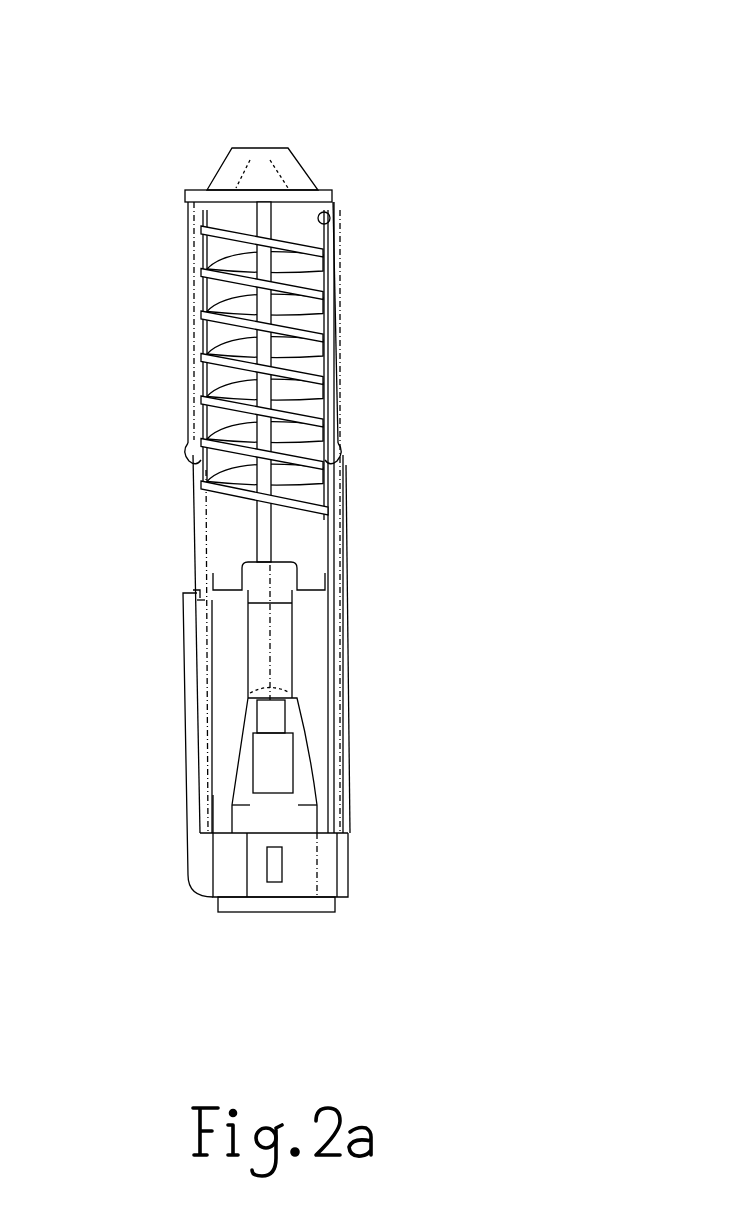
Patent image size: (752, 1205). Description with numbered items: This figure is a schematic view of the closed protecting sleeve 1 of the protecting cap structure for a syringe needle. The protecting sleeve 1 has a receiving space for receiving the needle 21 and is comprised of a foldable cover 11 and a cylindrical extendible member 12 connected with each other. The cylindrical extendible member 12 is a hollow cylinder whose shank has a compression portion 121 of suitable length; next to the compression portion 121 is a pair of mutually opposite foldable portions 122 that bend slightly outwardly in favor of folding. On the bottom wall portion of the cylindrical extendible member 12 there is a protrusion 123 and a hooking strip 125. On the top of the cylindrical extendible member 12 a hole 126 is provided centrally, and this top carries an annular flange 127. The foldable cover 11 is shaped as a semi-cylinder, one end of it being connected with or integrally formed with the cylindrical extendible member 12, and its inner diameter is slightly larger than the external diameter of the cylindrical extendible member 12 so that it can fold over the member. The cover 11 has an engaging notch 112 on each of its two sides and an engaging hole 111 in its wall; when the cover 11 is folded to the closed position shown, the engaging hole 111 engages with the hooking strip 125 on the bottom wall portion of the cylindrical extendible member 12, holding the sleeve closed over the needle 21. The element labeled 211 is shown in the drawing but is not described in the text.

The protecting sleeve 1 is at (508, 72).
The foldable cover 11 is at (188, 303).
The engaging hole 111 is at (186, 597).
The engaging notch 112 is at (192, 450).
The cylindrical extendible member 12 is at (315, 545).
The compression portion 121 is at (305, 295).
The foldable portions 122 is at (302, 640).
The protrusion 123 is at (275, 865).
The hooking strip 125 is at (190, 600).
The hole 126 is at (262, 148).
The annular flange 127 is at (323, 190).
The needle 21 is at (305, 752).
The bulb base plate 211 is at (317, 903).